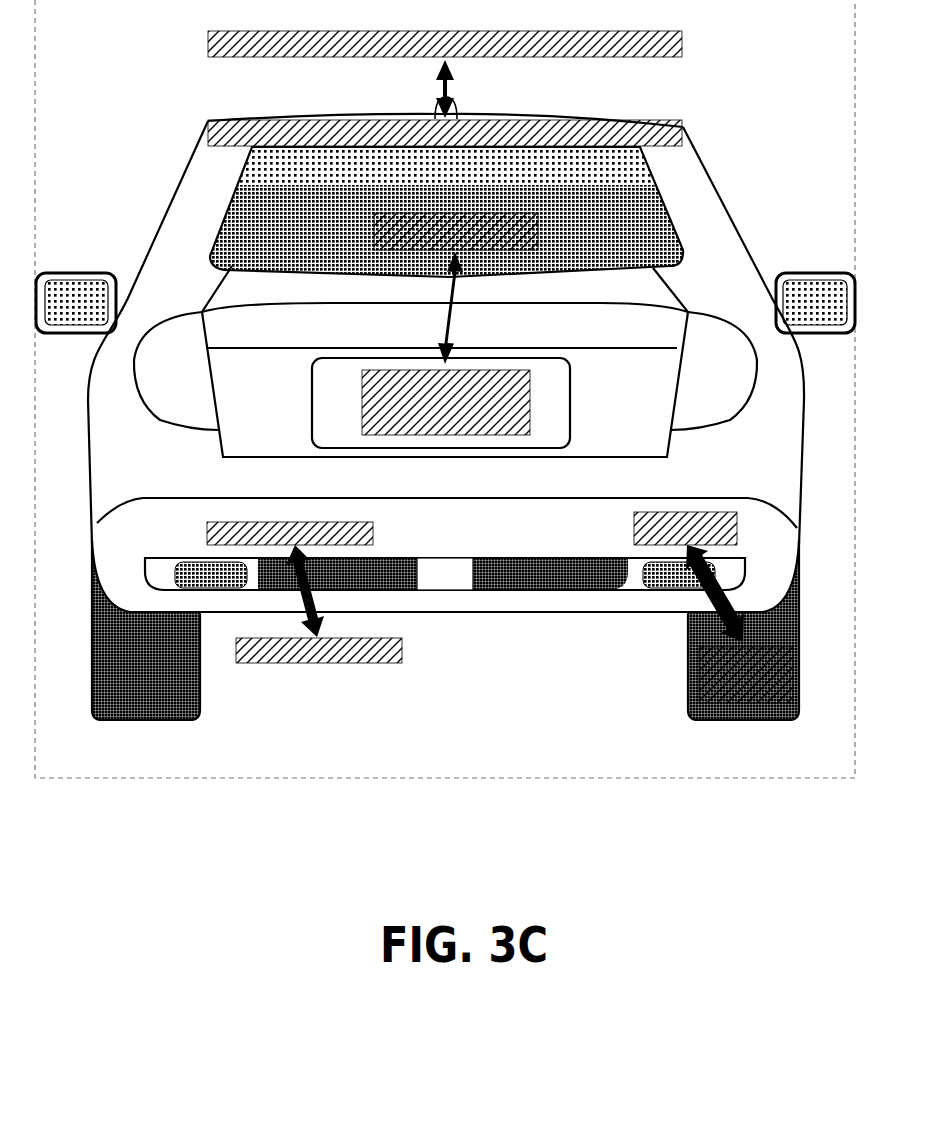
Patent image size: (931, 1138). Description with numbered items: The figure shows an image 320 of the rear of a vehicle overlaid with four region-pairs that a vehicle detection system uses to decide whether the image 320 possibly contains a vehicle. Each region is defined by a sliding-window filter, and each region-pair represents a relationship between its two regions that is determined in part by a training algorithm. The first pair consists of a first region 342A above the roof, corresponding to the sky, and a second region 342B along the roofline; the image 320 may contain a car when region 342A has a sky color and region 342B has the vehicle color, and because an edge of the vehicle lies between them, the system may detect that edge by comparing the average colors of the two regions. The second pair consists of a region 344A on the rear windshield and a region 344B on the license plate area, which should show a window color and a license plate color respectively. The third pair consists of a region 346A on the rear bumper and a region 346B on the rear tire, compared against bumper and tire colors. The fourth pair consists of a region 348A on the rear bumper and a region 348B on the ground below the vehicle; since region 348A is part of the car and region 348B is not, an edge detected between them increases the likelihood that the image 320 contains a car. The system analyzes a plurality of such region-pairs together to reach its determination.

The image 320 is at (297, 778).
The first region (sky) 342A is at (208, 38).
The second region (roofline) 342B is at (208, 132).
The first region (rear windshield) 344A is at (374, 232).
The second region (license plate region) 344B is at (362, 404).
The first region (rear bumper) 346A is at (634, 530).
The second region (rear tire) 346B is at (698, 676).
The first region (rear bumper) 348A is at (207, 530).
The second region (ground below vehicle) 348B is at (402, 650).